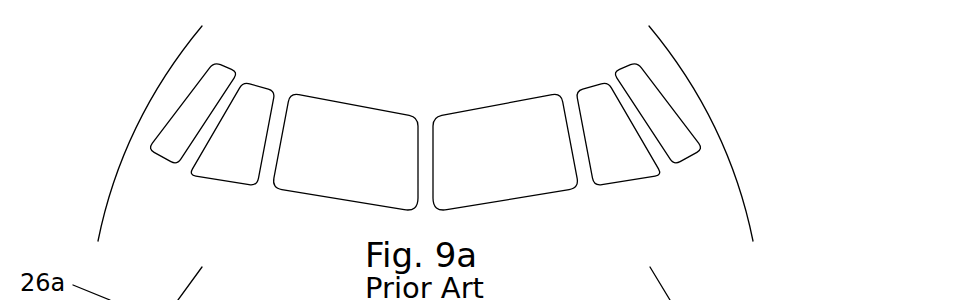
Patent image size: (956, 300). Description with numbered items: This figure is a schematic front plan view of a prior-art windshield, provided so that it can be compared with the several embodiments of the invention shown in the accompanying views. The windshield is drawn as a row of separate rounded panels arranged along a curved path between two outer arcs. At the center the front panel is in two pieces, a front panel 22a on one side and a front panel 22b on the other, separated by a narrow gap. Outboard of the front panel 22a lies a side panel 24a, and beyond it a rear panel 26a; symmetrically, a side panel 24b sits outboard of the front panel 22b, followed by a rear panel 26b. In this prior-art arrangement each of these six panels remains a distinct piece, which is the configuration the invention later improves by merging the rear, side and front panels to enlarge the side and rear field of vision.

The front panel 22a is at (297, 170).
The side panel 24a is at (242, 122).
The rear panel 26a is at (205, 80).
The front panel 22b is at (640, 180).
The side panel 24b is at (632, 147).
The rear panel 26b is at (655, 100).